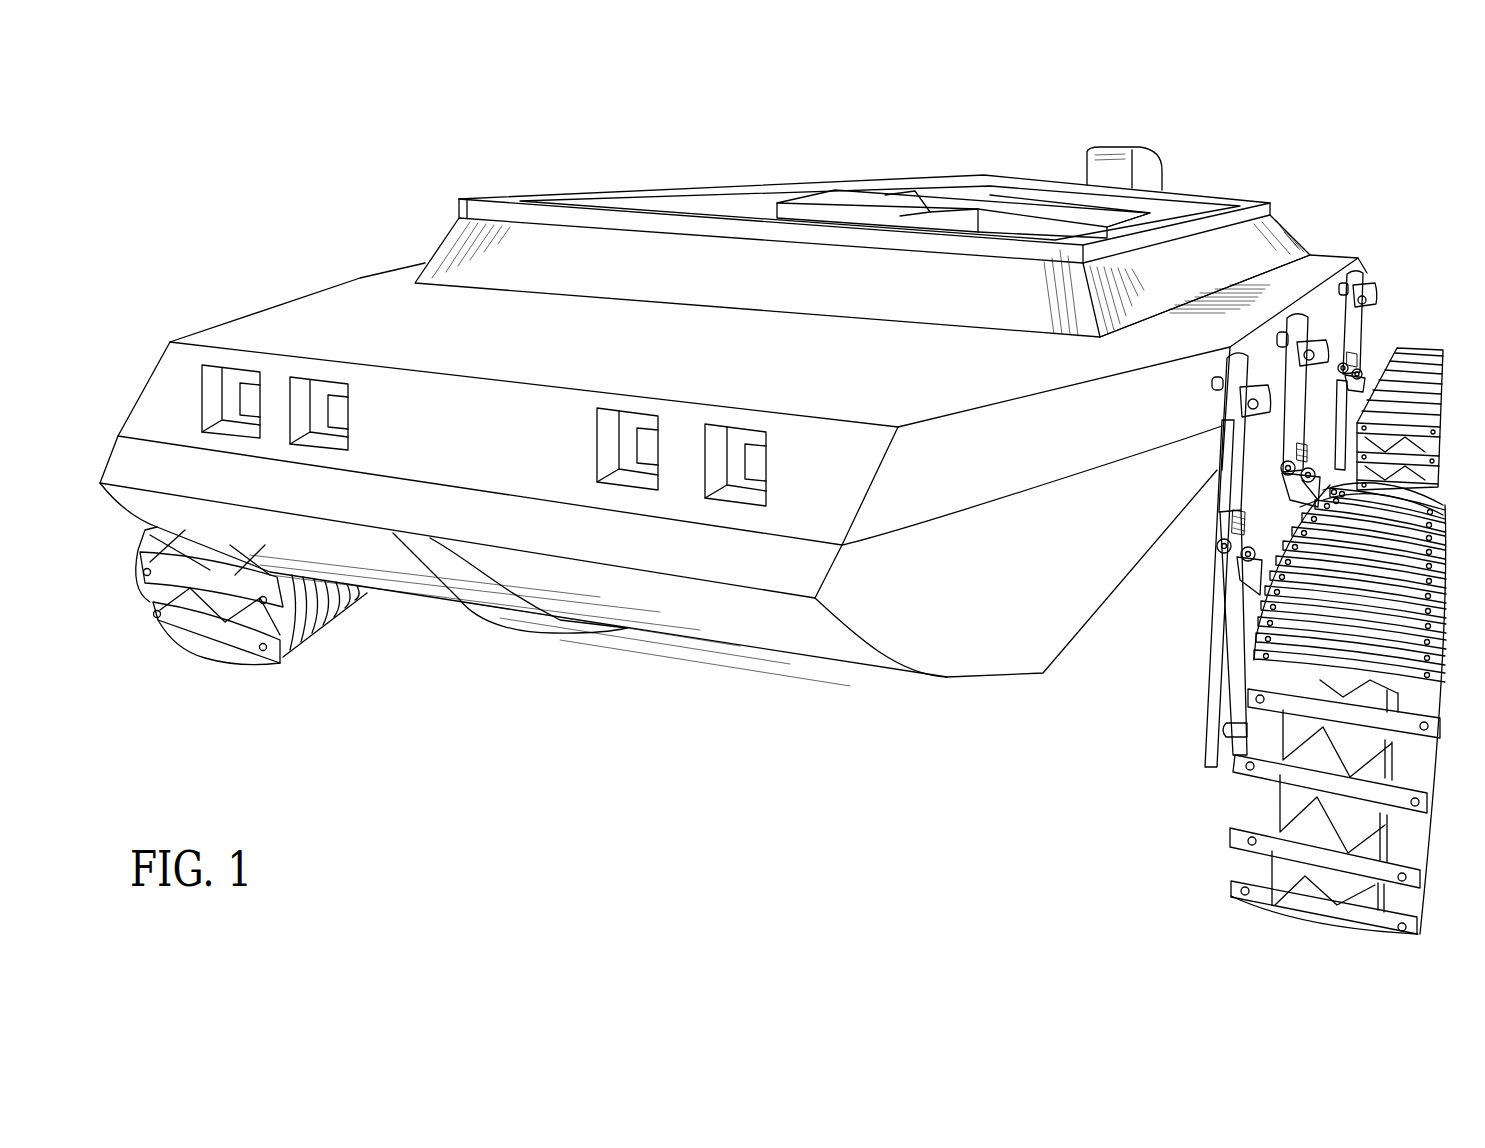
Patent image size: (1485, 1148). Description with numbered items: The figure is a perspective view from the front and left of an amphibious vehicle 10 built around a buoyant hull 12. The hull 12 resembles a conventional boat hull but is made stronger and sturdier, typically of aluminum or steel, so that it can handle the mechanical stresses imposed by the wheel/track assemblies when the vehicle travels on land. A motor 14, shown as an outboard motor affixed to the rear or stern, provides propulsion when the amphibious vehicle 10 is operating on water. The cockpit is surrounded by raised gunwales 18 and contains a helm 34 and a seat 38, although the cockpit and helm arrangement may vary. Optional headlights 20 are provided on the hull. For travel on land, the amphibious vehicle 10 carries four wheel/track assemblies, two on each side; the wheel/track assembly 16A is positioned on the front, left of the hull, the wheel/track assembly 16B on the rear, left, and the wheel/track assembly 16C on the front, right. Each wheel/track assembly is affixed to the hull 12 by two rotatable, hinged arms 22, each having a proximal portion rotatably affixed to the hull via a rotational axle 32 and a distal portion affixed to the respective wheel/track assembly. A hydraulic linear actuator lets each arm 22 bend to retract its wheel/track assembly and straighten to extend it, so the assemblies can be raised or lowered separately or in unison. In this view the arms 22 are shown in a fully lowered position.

The amphibious vehicle 10 is at (1292, 128).
The buoyant hull 12 is at (967, 638).
The motor 14 is at (1118, 168).
The wheel/track assembly 16A is at (1270, 803).
The wheel/track assembly 16B is at (1420, 360).
The wheel/track assembly 16C is at (237, 630).
The raised gunwales 18 is at (712, 182).
The headlights 20 is at (320, 387).
The arm 22 is at (1213, 615).
The rotational axle 32 is at (1212, 380).
The helm 34 is at (887, 210).
The seat 38 is at (1036, 215).